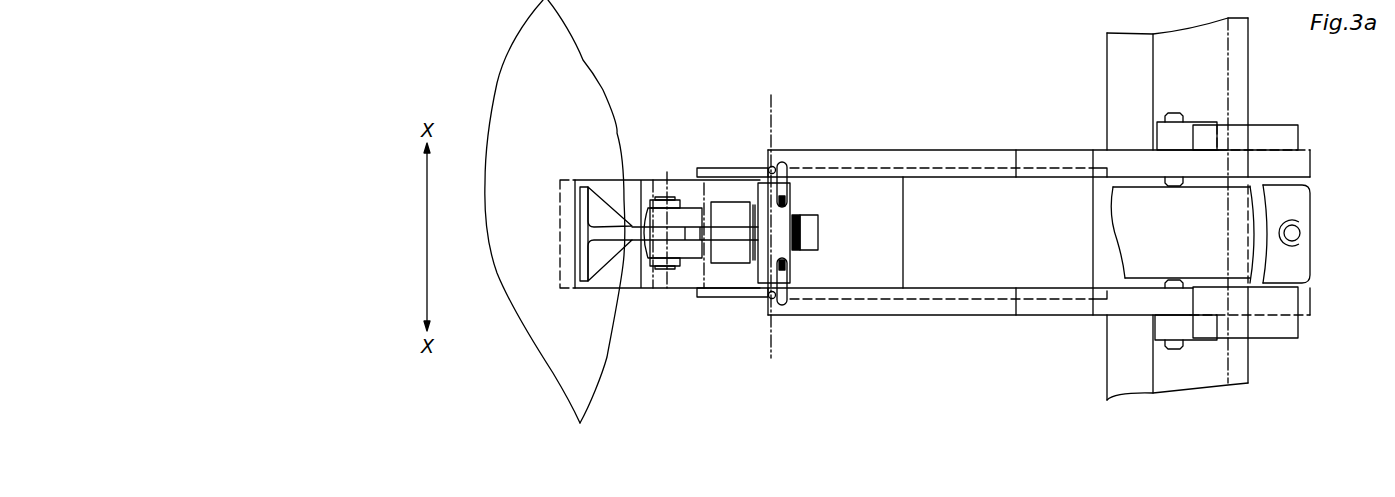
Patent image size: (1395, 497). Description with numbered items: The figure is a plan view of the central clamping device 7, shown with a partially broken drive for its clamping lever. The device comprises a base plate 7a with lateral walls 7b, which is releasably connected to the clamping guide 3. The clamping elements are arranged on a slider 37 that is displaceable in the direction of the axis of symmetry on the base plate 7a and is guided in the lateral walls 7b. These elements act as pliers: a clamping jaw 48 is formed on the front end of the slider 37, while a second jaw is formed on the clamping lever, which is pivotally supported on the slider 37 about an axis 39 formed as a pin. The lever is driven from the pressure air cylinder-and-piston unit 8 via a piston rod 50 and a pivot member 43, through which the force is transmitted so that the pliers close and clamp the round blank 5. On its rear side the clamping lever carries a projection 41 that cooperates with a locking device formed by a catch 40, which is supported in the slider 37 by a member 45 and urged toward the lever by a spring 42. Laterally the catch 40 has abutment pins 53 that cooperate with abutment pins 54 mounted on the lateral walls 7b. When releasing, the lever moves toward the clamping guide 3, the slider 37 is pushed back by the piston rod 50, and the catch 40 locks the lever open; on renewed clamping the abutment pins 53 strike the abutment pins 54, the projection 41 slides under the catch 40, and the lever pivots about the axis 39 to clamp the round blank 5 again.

The clamping guide 3 is at (1238, 343).
The round blank 5 is at (503, 118).
The central clamping device 7 is at (1048, 0).
The base plate 7a is at (939, 0).
The lateral walls 7b is at (977, 158).
The pressure air cylinder-and-piston unit 8 is at (1135, 253).
The slider 37 is at (704, 183).
The axis 39 is at (649, 10).
The catch 40 is at (752, 200).
The projection 41 is at (738, 263).
The spring 42 is at (805, 222).
The pivot member 43 is at (667, 288).
The member 45 is at (757, 0).
The clamping jaw 48 is at (577, 10).
The piston rod 50 is at (685, 215).
The abutment pins 53 is at (787, 163).
The abutment pins 54 is at (769, 226).